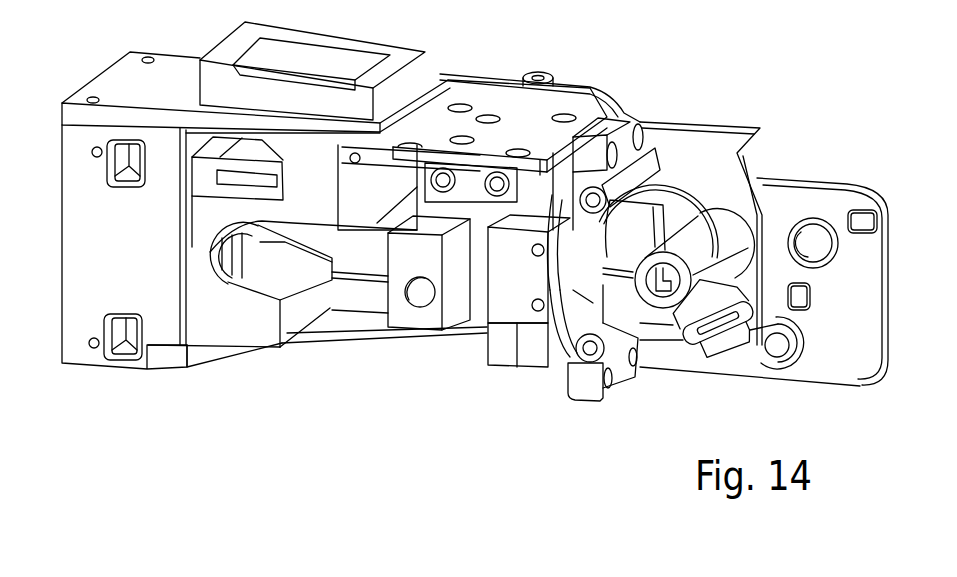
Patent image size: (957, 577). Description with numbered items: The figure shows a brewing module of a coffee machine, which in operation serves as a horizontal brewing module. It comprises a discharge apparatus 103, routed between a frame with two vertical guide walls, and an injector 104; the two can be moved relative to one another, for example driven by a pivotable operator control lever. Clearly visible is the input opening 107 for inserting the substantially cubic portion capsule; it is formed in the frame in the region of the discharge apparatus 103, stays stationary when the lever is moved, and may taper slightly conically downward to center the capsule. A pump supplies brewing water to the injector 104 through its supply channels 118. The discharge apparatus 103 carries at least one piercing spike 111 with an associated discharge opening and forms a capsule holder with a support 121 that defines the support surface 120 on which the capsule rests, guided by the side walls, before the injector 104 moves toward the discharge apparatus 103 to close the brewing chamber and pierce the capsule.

The discharge apparatus 103 is at (203, 303).
The injector 104 is at (519, 380).
The input opening 107 is at (316, 43).
The piercing spike 111 is at (228, 255).
The supply channels 118 is at (684, 338).
The support surface 120 is at (318, 292).
The support 121 is at (328, 303).